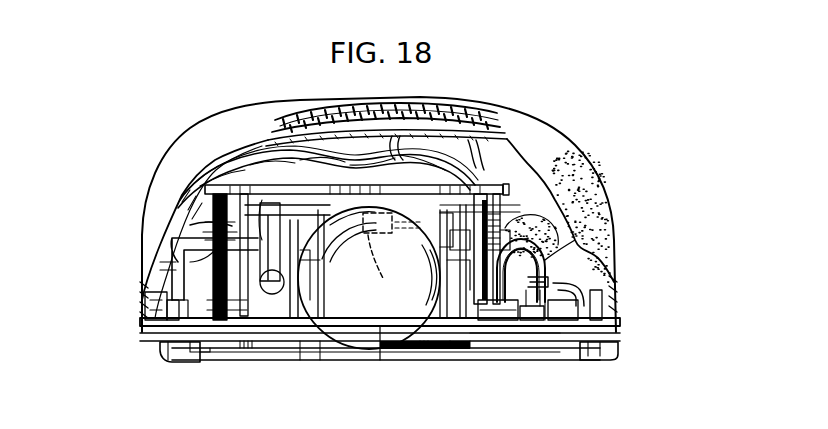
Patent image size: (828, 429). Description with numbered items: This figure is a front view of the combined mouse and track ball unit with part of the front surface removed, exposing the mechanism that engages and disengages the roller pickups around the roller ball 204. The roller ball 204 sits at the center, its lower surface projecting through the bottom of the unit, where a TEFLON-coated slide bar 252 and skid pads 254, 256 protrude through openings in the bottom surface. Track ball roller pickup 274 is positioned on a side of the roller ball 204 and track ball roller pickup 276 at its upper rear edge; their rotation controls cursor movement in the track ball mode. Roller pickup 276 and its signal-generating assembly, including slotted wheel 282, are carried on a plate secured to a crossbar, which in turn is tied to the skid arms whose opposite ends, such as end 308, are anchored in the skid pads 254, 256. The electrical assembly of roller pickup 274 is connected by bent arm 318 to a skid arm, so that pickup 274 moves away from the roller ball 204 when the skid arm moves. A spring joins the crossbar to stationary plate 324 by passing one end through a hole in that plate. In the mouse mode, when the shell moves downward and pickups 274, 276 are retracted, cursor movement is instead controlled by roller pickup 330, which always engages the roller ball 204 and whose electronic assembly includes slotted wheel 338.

The roller ball 204 is at (352, 308).
The slide bar 252 is at (517, 348).
The skid pad 254 is at (170, 347).
The skid pad 256 is at (590, 348).
The track ball roller pickup 274 is at (272, 285).
The track ball roller pickup 276 is at (391, 261).
The slotted wheel 282 is at (503, 232).
The opposite end of skid arm 308 is at (170, 305).
The bent arm 318 is at (203, 243).
The stationary plate 324 is at (277, 200).
The roller pickup 330 is at (465, 336).
The slotted wheel 338 is at (573, 243).